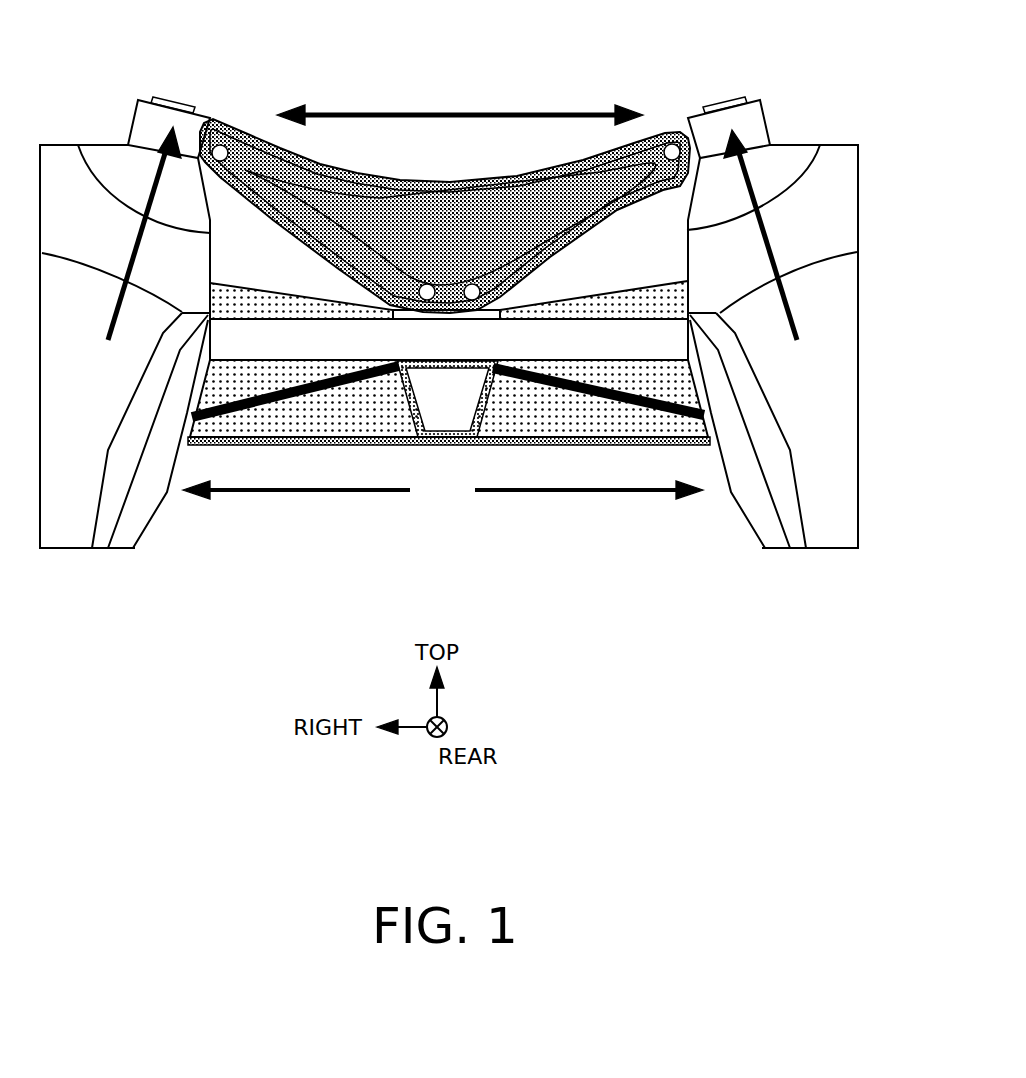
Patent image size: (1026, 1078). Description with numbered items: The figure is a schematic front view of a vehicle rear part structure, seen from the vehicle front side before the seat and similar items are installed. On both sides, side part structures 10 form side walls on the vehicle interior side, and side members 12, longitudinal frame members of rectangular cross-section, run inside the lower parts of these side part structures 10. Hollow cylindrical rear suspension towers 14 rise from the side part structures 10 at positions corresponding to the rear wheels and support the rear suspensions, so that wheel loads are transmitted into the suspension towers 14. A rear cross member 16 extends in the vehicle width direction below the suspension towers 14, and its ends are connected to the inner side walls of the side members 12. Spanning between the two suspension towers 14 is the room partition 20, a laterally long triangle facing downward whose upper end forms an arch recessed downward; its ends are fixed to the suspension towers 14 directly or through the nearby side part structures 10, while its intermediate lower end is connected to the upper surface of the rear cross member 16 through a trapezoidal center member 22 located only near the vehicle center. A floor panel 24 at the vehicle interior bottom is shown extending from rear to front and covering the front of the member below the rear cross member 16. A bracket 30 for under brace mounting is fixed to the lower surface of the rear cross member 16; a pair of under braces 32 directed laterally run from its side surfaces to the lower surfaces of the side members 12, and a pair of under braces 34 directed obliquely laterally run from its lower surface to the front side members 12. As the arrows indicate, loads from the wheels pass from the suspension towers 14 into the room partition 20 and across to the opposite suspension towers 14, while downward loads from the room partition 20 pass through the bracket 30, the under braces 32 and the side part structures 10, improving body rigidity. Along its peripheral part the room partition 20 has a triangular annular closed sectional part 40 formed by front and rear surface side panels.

The side part structure 10 is at (67, 472).
The side member 12 is at (163, 480).
The rear suspension tower 14 is at (147, 100).
The rear cross member 16 is at (283, 335).
The room partition 20 is at (443, 180).
The center member 22 is at (373, 309).
The floor panel 24 is at (583, 307).
The bracket 30 is at (447, 413).
The under brace directed laterally 32 is at (352, 385).
The under brace directed obliquely laterally 34 is at (327, 447).
The triangular annular closed sectional part 40 is at (317, 173).